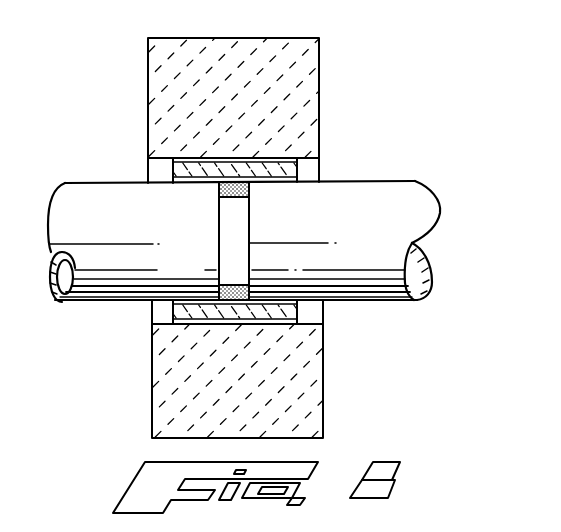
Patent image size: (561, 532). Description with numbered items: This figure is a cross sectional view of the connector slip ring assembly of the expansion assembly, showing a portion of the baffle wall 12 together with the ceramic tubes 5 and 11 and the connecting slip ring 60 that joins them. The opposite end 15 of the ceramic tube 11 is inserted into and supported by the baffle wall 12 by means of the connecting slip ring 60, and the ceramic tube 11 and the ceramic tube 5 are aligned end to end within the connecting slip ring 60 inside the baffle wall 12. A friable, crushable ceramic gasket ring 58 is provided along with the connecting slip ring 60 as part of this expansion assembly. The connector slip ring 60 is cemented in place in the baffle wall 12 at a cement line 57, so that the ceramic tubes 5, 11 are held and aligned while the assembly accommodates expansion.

The ceramic tube 5 is at (395, 182).
The ceramic tube 11 is at (100, 182).
The baffle wall 12 is at (319, 47).
The end of ceramic tube 15 is at (249, 231).
The cement line 57 is at (240, 158).
The ceramic gasket ring 58 is at (220, 185).
The connecting slip ring 60 is at (297, 171).